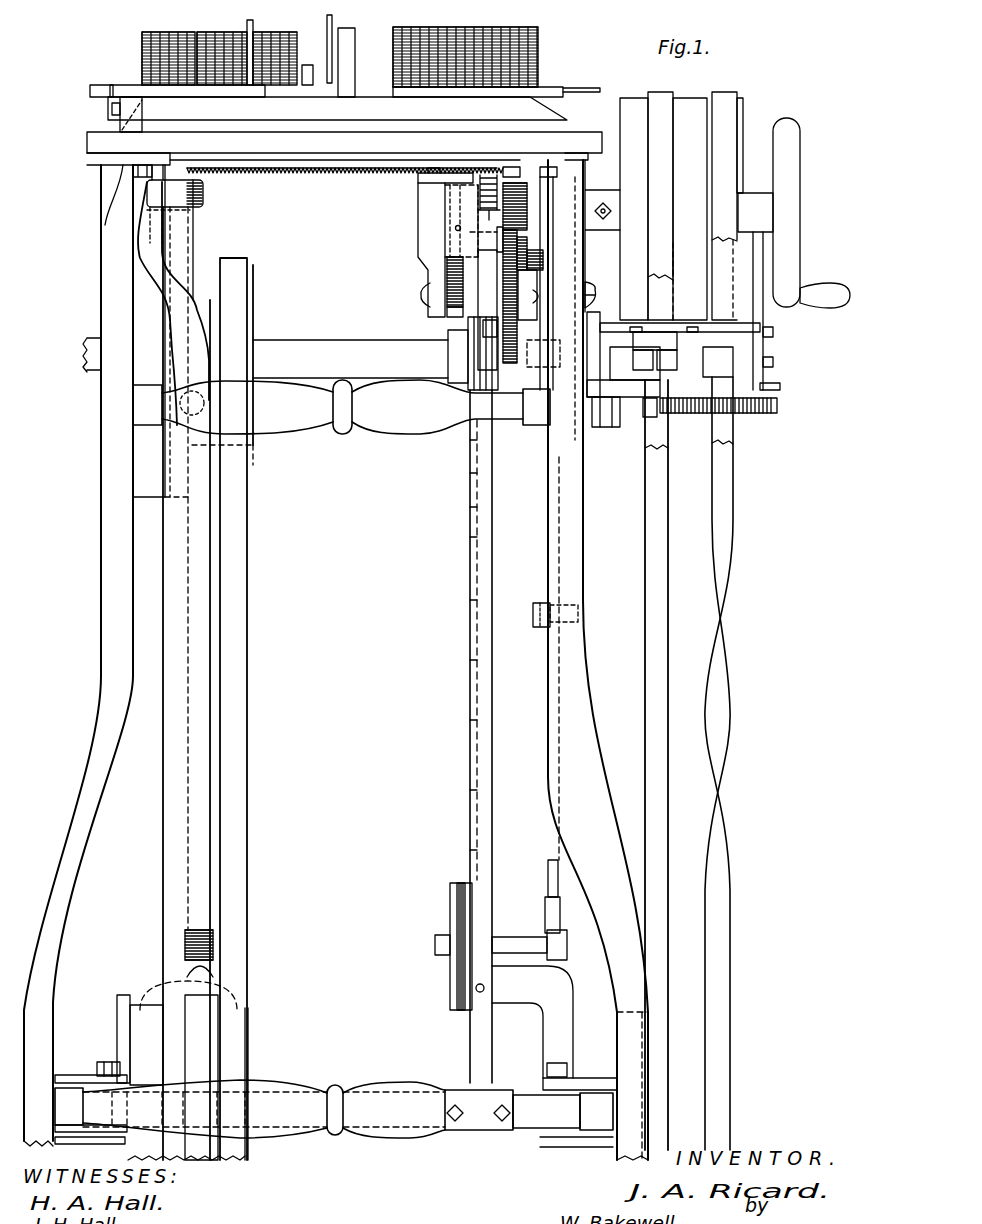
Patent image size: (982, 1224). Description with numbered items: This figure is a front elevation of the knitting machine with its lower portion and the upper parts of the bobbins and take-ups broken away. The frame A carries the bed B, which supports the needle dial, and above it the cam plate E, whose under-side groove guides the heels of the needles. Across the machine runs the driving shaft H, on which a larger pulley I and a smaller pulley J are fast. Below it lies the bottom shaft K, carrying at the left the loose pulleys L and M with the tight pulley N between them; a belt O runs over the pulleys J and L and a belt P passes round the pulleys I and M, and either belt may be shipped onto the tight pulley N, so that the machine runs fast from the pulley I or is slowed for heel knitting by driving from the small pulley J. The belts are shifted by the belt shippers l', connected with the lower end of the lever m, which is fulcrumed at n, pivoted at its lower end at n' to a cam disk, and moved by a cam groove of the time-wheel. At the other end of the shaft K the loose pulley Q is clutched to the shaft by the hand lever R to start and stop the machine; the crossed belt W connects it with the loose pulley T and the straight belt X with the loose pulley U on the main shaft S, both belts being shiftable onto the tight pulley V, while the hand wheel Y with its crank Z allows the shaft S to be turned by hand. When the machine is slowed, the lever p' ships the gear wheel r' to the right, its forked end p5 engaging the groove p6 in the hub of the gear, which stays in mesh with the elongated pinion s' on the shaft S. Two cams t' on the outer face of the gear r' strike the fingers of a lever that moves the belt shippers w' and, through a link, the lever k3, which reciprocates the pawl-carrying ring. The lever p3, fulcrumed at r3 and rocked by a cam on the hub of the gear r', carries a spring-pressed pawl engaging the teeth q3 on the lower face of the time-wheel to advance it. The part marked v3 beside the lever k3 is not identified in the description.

The cam plate E is at (337, 109).
The bed B is at (340, 143).
The teeth q3 is at (278, 174).
The frame A is at (78, 655).
The larger pulley I is at (162, 331).
The smaller pulley J is at (175, 303).
The belt P is at (164, 892).
The lever m is at (220, 568).
The belt O is at (236, 709).
The driving shaft H is at (360, 356).
The fulcrum n is at (341, 407).
The lever p' is at (432, 242).
The fulcrum r3 is at (493, 242).
The forked portion p5 is at (447, 272).
The groove p6 is at (463, 307).
The lever p3 is at (488, 293).
The elongated pinion s' is at (501, 194).
The gear wheel r' is at (519, 283).
The cams t' is at (543, 278).
The belt shippers w' is at (521, 343).
The lever k3 is at (581, 184).
The lug v3 is at (597, 290).
The loose pulley U is at (634, 209).
The tight pulley V is at (692, 206).
The loose pulley T is at (752, 118).
The main shaft S is at (759, 291).
The hand wheel Y is at (786, 212).
The crank Z is at (830, 308).
The straight belt X is at (656, 765).
The crossed belt W is at (724, 728).
The lever R is at (481, 736).
The pulley Q is at (653, 1086).
The belt shippers l' is at (106, 1039).
The loose pulley M is at (146, 1045).
The tight pulley N is at (201, 1077).
The loose pulley L is at (250, 1057).
The pivot n' is at (209, 970).
The bottom shaft K is at (334, 1109).